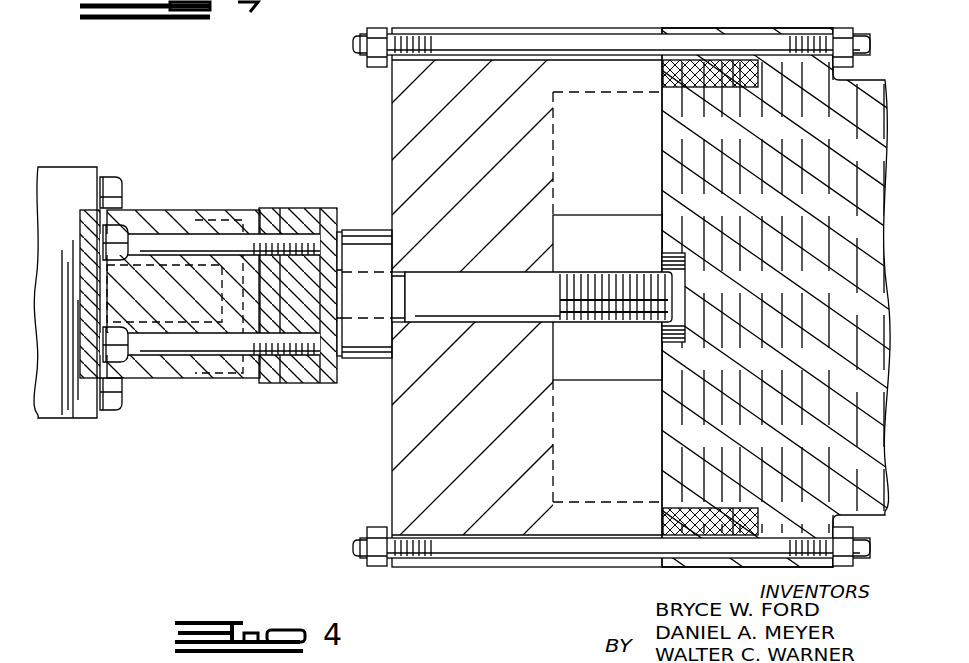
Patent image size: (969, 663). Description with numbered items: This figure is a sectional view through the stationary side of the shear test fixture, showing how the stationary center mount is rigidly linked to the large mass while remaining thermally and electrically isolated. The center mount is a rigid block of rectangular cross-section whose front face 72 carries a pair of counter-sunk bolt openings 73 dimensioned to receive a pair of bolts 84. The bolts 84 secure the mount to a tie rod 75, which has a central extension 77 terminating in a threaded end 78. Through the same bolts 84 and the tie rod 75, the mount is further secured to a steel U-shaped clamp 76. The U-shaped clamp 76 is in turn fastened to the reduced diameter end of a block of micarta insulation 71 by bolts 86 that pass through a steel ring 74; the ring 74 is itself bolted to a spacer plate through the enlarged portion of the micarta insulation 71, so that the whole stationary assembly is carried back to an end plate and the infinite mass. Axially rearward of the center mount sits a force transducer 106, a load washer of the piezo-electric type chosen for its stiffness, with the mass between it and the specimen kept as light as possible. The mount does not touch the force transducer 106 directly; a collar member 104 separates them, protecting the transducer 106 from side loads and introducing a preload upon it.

The block of micarta insulation 71 is at (773, 27).
The front face 72 is at (78, 291).
The counter-sunk bolt openings 73 is at (83, 232).
The steel ring 74 is at (672, 571).
The tie rod 75 is at (296, 210).
The U-shaped clamp 76 is at (398, 120).
The central extension 77 is at (455, 278).
The threaded end 78 is at (605, 278).
The bolts 84 is at (165, 242).
The bolts 86 is at (503, 45).
The collar member 104 is at (338, 366).
The force transducer 106 is at (366, 230).